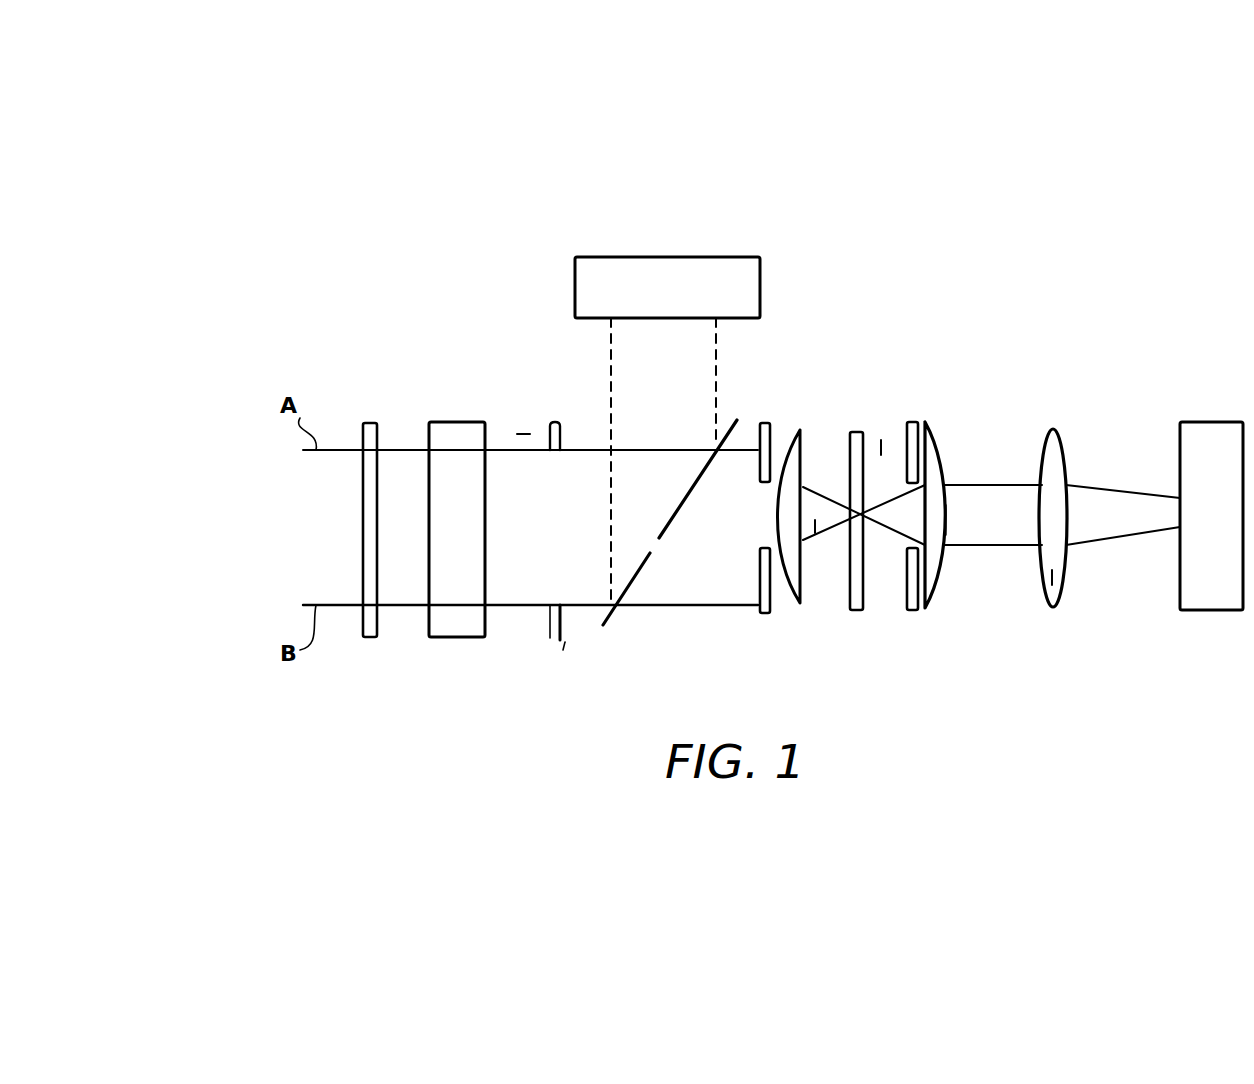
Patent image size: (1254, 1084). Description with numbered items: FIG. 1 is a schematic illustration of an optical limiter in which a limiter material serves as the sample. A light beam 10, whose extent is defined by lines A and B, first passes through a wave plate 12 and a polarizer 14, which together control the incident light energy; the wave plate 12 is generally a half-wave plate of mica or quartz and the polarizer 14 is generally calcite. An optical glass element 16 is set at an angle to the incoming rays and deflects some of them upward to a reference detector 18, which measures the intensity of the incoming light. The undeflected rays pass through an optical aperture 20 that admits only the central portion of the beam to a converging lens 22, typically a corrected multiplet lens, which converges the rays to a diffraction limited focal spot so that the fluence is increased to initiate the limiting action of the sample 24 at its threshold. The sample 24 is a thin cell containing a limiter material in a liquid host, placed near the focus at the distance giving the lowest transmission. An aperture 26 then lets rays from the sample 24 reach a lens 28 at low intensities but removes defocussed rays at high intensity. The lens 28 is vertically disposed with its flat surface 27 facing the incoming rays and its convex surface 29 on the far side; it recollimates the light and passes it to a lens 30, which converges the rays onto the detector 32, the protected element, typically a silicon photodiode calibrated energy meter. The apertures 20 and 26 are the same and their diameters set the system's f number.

The light beam 10 is at (238, 542).
The wave plate 12 is at (377, 423).
The polarizer 14 is at (460, 422).
The optical glass element 16 is at (652, 558).
The reference detector 18 is at (575, 292).
The optical aperture 20 is at (770, 423).
The converging lens 22 is at (795, 605).
The sample 24 is at (857, 432).
The aperture 26 is at (911, 612).
The flat surface 27 is at (928, 526).
The lens 28 is at (928, 422).
The convex surface 29 is at (980, 532).
The lens 30 is at (1048, 432).
The detector 32 is at (1225, 422).